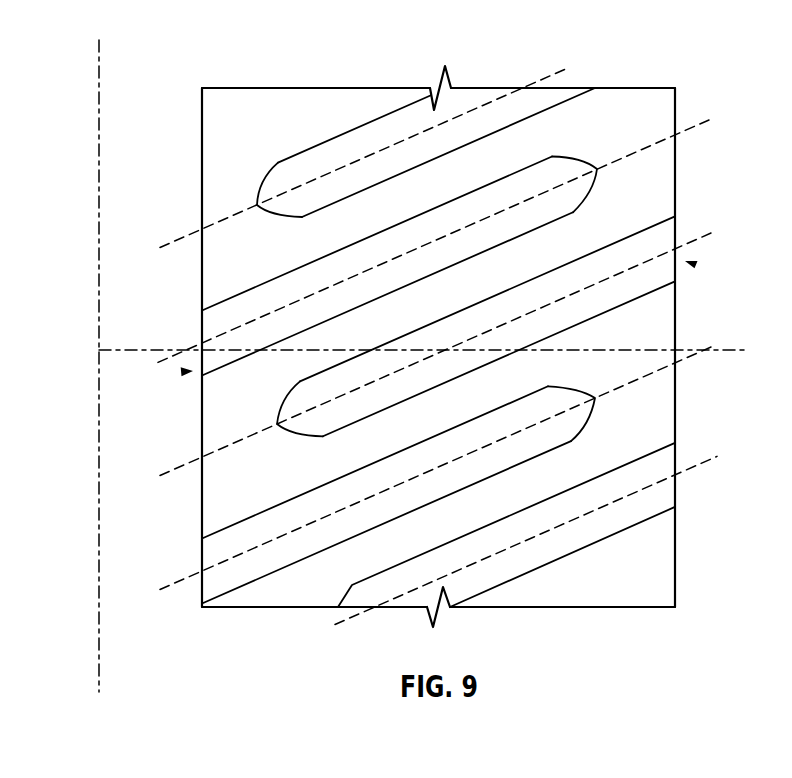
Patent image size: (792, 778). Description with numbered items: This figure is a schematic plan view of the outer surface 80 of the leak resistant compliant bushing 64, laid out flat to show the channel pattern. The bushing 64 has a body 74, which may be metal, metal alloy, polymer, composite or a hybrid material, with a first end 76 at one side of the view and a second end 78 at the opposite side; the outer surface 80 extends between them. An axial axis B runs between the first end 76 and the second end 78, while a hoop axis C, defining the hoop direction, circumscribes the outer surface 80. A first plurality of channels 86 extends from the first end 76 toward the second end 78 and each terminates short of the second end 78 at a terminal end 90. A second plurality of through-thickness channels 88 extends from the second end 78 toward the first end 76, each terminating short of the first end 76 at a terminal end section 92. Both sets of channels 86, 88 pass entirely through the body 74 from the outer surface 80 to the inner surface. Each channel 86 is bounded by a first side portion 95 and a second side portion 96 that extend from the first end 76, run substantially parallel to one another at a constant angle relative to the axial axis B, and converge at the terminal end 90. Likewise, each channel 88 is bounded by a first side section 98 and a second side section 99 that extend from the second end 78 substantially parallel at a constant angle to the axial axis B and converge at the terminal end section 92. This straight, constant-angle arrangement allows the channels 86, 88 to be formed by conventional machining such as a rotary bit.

The leak resistant compliant bushing 64 is at (660, 655).
The body 74 is at (663, 576).
The first end 76 is at (202, 124).
The second end 78 is at (677, 113).
The outer surface 80 is at (278, 105).
The first plurality of channels 86 is at (183, 373).
The second plurality of through-thickness channels 88 is at (694, 264).
The terminal end 90 is at (435, 264).
The terminal end section 92 is at (436, 356).
The first side portion 95 is at (223, 302).
The second side portion 96 is at (300, 332).
The first side section 98 is at (538, 279).
The second side section 99 is at (542, 338).
The axial axis B is at (715, 349).
The hoop axis C is at (100, 640).